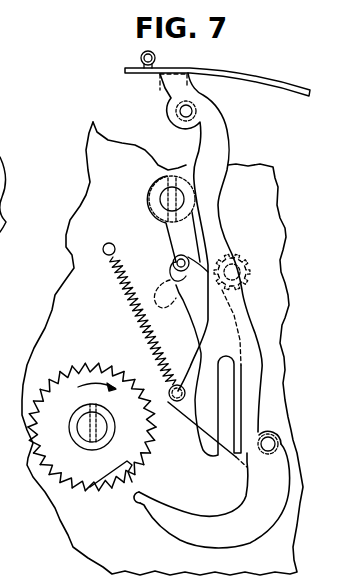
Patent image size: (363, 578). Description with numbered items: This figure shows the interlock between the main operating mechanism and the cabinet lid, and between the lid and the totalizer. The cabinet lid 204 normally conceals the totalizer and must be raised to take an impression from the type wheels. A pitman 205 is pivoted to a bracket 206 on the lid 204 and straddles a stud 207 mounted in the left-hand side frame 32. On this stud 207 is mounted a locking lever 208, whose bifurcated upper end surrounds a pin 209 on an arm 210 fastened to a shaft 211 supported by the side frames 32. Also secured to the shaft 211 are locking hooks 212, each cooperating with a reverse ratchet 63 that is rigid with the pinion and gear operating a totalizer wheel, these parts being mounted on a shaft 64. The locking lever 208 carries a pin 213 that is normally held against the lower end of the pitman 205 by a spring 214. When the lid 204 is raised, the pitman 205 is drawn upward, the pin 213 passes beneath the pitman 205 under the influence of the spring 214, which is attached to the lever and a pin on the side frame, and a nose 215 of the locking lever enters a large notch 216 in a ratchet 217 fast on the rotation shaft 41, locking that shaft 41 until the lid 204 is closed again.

The left-hand side frame 32 is at (276, 388).
The shaft 41 is at (83, 433).
The reverse ratchet 63 is at (270, 240).
The shaft 64 is at (243, 292).
The cabinet lid 204 is at (242, 76).
The pitman 205 is at (210, 183).
The bracket 206 is at (166, 93).
The stud 207 is at (232, 362).
The locking lever 208 is at (250, 528).
The pin 209 is at (176, 258).
The arm 210 is at (165, 228).
The shaft 211 is at (165, 186).
The locking hook 212 is at (160, 283).
The pin 213 is at (279, 449).
The spring 214 is at (135, 322).
The nose 215 is at (175, 526).
The large notch 216 is at (120, 480).
The ratchet 217 is at (100, 367).